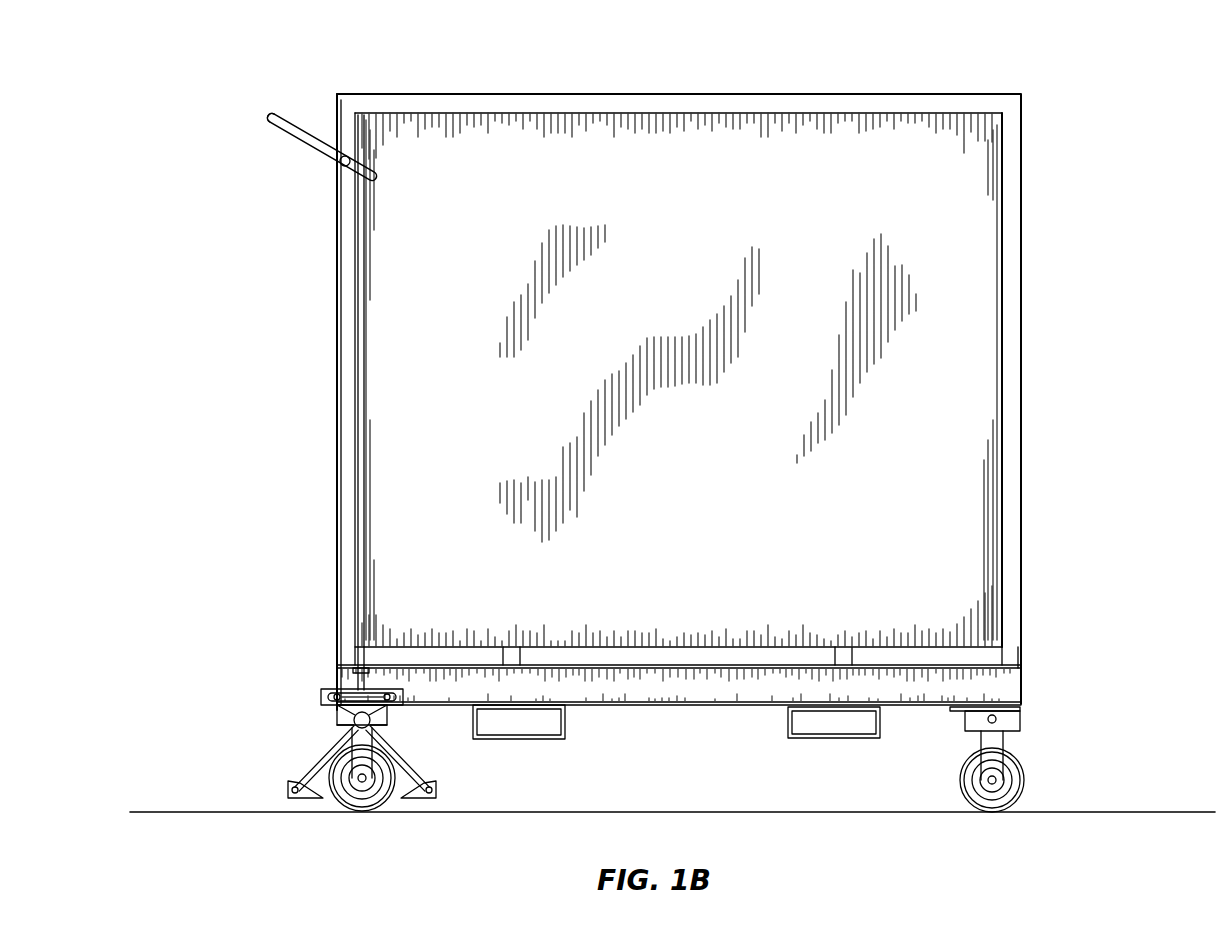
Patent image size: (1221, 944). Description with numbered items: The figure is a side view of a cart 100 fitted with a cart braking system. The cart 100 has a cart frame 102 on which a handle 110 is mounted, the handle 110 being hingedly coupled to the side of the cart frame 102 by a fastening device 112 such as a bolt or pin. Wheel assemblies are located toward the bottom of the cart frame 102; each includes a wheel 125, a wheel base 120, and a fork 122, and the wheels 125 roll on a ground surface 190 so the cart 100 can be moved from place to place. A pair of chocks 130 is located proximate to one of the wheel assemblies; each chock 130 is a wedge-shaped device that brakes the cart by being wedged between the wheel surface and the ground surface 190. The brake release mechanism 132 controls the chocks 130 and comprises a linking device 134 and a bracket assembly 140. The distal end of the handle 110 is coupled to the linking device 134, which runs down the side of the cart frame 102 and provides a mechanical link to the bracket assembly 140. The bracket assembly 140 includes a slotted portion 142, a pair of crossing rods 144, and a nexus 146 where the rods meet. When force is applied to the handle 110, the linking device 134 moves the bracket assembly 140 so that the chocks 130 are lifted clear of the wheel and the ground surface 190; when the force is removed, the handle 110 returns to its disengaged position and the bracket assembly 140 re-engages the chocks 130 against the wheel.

The cart 100 is at (1113, 70).
The cart frame 102 is at (1022, 375).
The handle 110 is at (283, 118).
The fastening device 112 is at (338, 166).
The wheel base 120 is at (337, 716).
The fork 122 is at (351, 782).
The wheel 125 is at (1027, 781).
The chock 130 is at (311, 801).
The brake release mechanism 132 is at (288, 558).
The linking device 134 is at (365, 392).
The bracket assembly 140 is at (449, 771).
The slotted portion 142 is at (322, 695).
The crossing rods 144 is at (313, 767).
The nexus 146 is at (371, 723).
The ground surface 190 is at (702, 812).